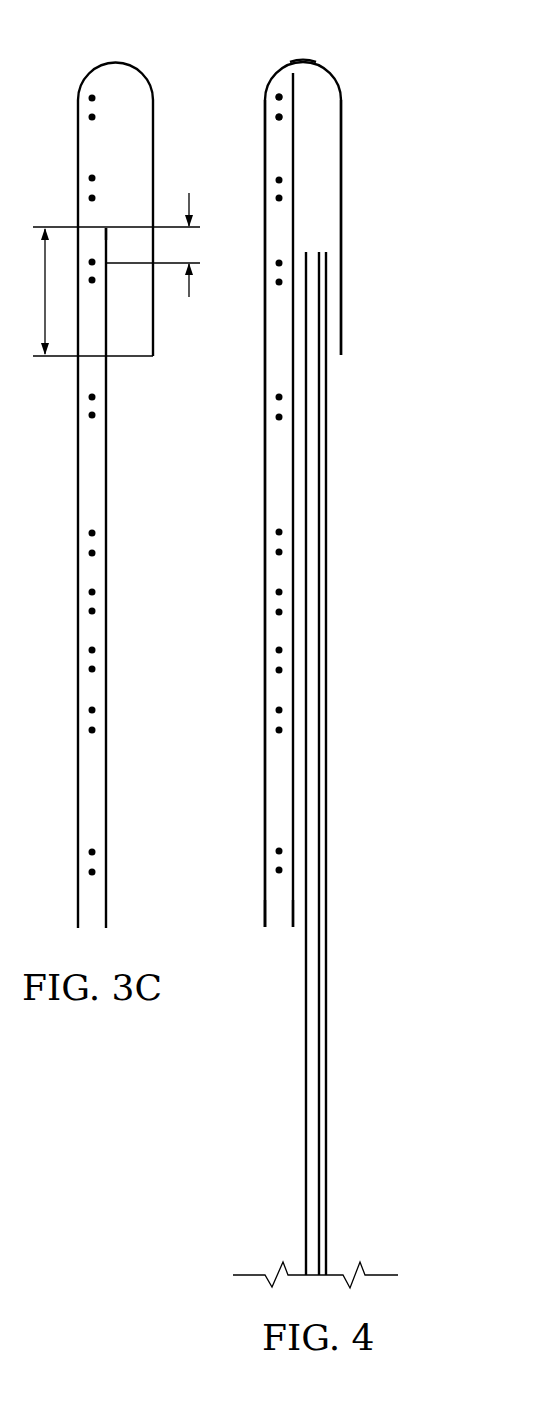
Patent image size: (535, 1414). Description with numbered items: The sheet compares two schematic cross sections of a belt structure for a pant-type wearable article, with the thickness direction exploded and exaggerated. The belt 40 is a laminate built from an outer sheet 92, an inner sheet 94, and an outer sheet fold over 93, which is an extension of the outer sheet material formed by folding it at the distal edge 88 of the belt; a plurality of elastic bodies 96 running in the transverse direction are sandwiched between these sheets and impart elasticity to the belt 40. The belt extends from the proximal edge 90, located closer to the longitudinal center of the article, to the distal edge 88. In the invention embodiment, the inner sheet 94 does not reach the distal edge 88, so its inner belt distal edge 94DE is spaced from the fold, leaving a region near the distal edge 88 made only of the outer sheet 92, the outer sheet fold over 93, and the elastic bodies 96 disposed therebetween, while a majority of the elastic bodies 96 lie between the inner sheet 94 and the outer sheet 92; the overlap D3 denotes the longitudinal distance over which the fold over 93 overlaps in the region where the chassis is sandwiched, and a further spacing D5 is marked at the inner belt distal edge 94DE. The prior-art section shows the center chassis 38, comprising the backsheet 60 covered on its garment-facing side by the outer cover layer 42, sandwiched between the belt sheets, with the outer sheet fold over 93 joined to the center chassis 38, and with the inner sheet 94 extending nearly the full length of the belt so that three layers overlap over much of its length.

In FIG. 4, the center chassis 38 is at (368, 1060).
In FIG. 3C, the elastic belt 40 is at (48, 596).
In FIG. 4, the elastic belt 40 is at (233, 745).
In FIG. 4, the outer cover layer 42 is at (305, 982).
In FIG. 4, the backsheet 60 is at (318, 1072).
In FIG. 4, the distal edge 88 is at (303, 62).
In FIG. 4, the proximal edge 90 is at (263, 927).
In FIG. 4, the outer sheet 92 is at (265, 467).
In FIG. 4, the outer sheet fold over 93 is at (342, 230).
In FIG. 3C, the inner sheet 94 is at (107, 817).
In FIG. 4, the inner sheet 94 is at (292, 362).
In FIG. 3C, the inner belt distal edge 94DE is at (105, 222).
In FIG. 4, the elastic bodies 96 is at (272, 98).
In FIG. 3C, the overlap D3 is at (108, 291).
In FIG. 3C, the dimension D5 is at (155, 245).